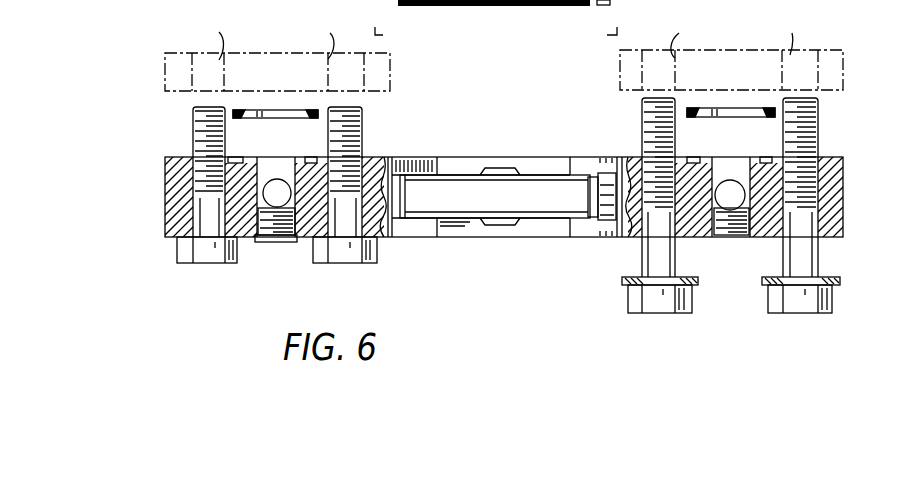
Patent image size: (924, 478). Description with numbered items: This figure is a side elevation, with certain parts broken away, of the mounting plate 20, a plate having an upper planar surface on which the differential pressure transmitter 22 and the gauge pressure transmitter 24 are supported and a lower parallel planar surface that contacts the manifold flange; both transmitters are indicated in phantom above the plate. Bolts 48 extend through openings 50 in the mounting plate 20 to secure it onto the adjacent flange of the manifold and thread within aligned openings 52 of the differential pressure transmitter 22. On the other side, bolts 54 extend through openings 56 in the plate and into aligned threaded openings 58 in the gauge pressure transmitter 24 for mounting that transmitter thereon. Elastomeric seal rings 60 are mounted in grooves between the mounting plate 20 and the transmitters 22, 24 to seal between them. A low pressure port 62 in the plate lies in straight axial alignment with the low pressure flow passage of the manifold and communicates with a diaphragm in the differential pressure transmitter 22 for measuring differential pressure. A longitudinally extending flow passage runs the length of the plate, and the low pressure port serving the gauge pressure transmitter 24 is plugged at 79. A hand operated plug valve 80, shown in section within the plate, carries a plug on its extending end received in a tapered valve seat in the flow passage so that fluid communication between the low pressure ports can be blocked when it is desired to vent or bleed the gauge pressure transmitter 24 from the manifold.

The mounting plate 20 is at (845, 173).
The differential pressure transmitter 22 is at (845, 60).
The gauge pressure transmitter 24 is at (163, 73).
The bolts 48 is at (677, 255).
The openings 50 is at (818, 147).
The aligned openings 52 is at (739, 35).
The bolts 54 is at (208, 253).
The openings 56 is at (193, 147).
The aligned threaded openings 58 is at (267, 35).
The elastomeric seal rings 60 is at (239, 117).
The low pressure port 62 is at (740, 162).
The plug 79 is at (280, 242).
The hand operated plug valve 80 is at (492, 187).